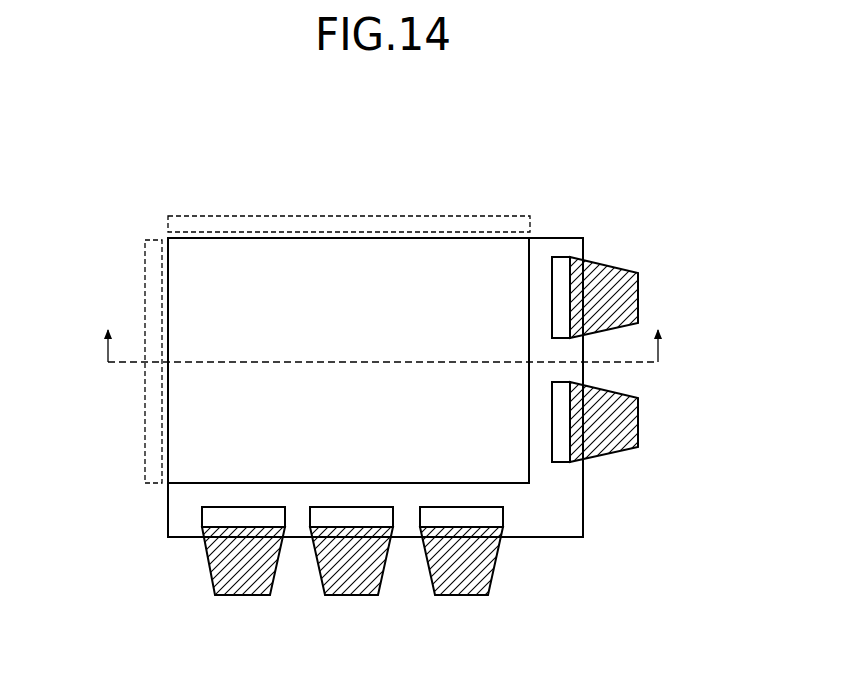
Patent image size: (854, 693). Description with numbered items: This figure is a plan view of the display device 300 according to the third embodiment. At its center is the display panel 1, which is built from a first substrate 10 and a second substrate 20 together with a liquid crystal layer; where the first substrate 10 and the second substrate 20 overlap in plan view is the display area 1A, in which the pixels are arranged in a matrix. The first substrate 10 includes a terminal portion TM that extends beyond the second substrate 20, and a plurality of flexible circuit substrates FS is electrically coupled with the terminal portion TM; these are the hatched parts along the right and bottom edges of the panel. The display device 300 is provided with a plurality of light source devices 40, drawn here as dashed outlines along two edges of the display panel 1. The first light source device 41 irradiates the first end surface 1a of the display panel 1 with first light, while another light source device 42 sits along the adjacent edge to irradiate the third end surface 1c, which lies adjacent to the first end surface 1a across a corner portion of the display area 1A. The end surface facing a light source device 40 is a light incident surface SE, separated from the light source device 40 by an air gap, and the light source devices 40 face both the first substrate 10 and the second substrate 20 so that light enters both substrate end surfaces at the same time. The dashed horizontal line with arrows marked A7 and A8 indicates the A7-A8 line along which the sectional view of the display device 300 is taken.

The display device 300 is at (622, 166).
The terminal portion TM is at (563, 502).
The display panel 1 is at (289, 236).
The display area 1A is at (362, 270).
The third end surface 1c is at (407, 238).
The first end surface 1a is at (168, 418).
The light incident surface SE is at (299, 313).
The second substrate 20 is at (484, 272).
The first substrate 10 is at (555, 250).
The light source device 40 is at (323, 364).
The first light source device 41 is at (153, 485).
The frame top portion 42 is at (203, 230).
The flexible circuit substrate FS is at (612, 272).
The A7-A8 line A7 is at (363, 346).
The A7-A8 line A8 is at (678, 346).